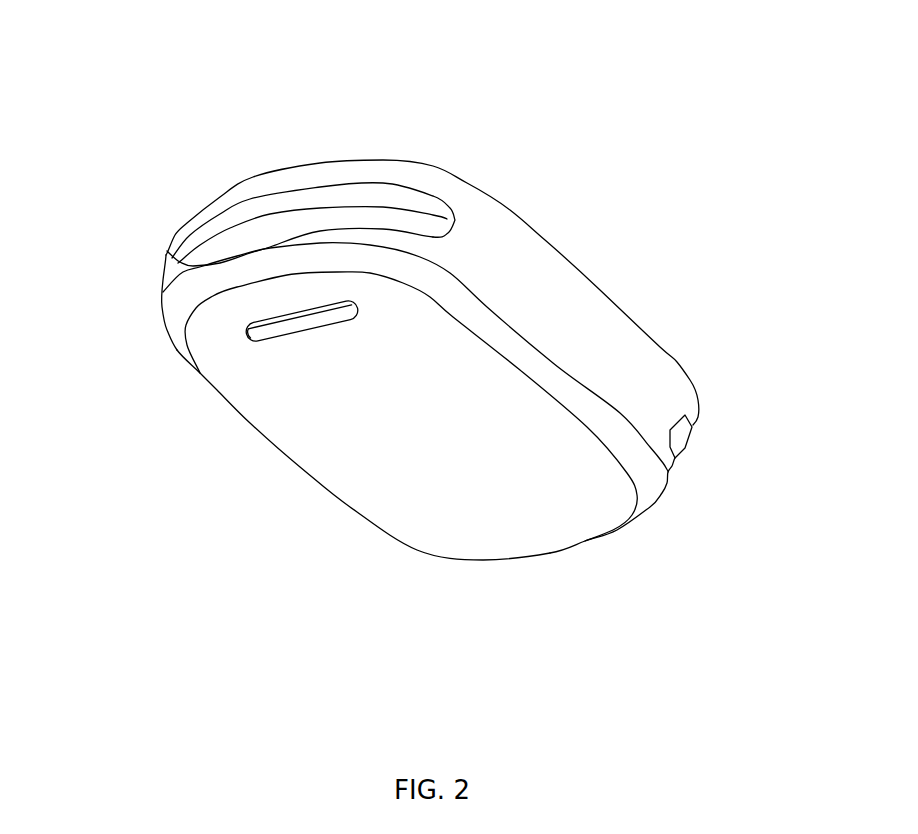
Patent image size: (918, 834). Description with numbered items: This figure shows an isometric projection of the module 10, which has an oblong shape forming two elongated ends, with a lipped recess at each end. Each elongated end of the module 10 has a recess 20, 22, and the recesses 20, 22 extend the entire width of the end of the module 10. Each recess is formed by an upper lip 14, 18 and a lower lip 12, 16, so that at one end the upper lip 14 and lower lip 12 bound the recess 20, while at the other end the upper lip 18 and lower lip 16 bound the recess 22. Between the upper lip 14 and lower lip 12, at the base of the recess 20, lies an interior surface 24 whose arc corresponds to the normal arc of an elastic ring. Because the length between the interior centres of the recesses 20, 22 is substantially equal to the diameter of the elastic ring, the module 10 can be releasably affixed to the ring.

The module 10 is at (436, 325).
The lower lip 12 is at (166, 257).
The upper lip 14 is at (277, 183).
The lower lip 16 is at (664, 493).
The upper lip 18 is at (693, 427).
The recess 20 is at (327, 212).
The recess 22 is at (680, 468).
The interior surface 24 is at (428, 228).